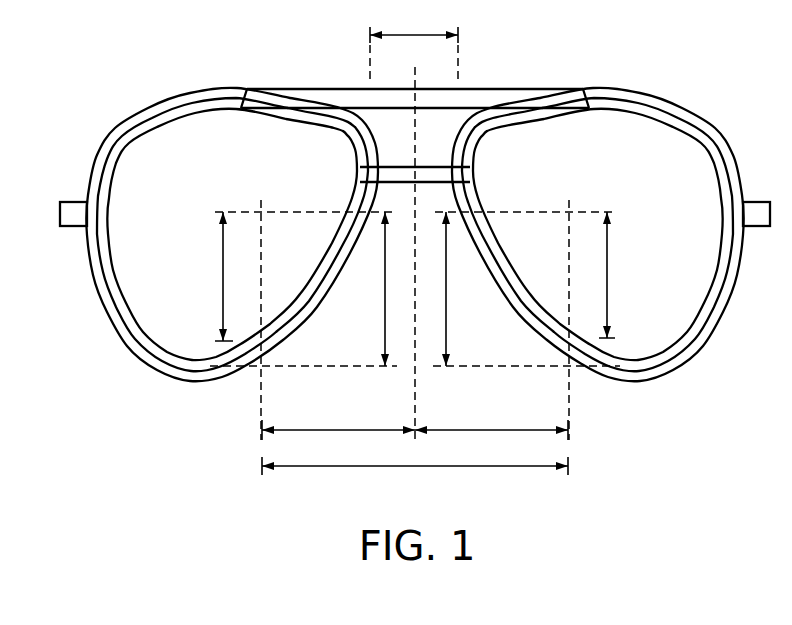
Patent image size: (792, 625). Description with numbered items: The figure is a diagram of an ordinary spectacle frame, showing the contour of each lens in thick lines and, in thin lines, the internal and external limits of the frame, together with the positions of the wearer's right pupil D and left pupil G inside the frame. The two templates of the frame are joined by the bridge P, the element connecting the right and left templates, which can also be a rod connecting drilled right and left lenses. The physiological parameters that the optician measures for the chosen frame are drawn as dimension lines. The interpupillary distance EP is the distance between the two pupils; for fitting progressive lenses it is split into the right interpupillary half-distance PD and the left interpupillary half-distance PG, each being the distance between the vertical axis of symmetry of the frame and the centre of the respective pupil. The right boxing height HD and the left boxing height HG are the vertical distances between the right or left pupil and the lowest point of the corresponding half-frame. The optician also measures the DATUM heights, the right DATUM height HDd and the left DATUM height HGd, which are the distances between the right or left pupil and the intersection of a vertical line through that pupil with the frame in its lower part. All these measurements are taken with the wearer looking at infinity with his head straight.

The bridge P is at (414, 22).
The right pupil D is at (261, 303).
The left pupil G is at (569, 303).
The right DATUM height HDd is at (197, 276).
The right boxing height HD is at (363, 289).
The left boxing height HG is at (468, 289).
The left DATUM height HGd is at (635, 275).
The right interpupillary half-distance PD is at (338, 417).
The left interpupillary half-distance PG is at (491, 417).
The interpupillary distance EP is at (415, 479).